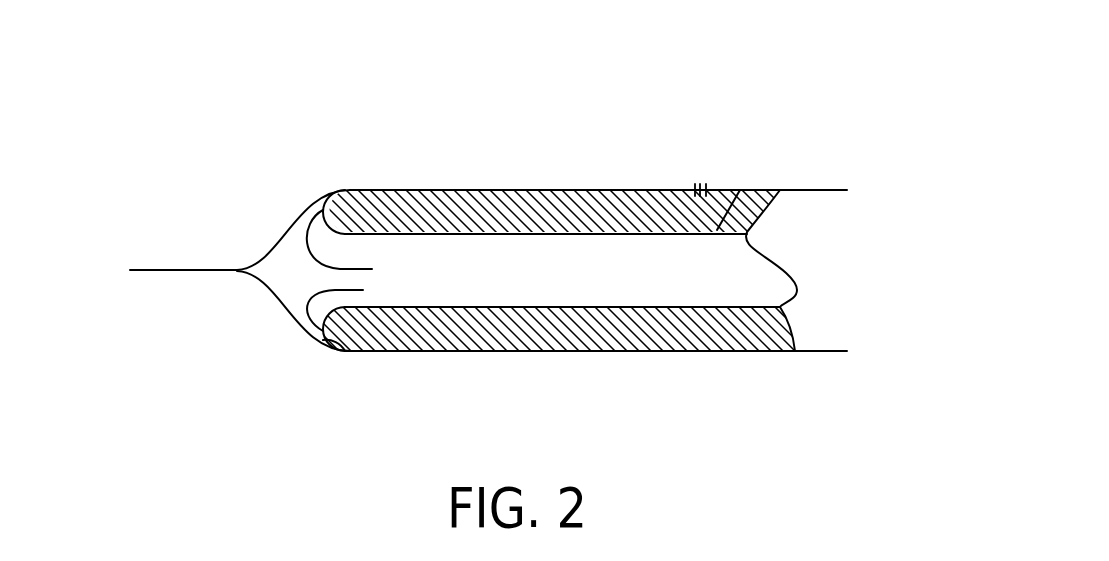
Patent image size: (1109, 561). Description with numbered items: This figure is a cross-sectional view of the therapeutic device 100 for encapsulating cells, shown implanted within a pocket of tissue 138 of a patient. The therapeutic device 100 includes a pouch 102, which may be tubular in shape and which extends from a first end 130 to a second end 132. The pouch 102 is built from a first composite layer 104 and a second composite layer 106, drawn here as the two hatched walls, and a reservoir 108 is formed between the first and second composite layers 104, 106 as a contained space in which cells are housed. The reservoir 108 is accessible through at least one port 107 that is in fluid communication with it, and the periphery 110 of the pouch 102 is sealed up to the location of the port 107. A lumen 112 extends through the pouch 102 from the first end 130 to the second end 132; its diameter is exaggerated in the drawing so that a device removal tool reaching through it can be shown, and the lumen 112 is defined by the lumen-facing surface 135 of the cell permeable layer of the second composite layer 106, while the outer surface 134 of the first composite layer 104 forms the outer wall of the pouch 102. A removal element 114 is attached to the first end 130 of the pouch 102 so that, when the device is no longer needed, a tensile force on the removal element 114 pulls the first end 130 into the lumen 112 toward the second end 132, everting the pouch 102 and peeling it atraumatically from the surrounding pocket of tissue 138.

The therapeutic device 100 is at (323, 146).
The pouch 102 is at (393, 189).
The first composite layer 104 is at (462, 189).
The second composite layer 106 is at (473, 306).
The port 107 is at (698, 186).
The reservoir 108 is at (527, 215).
The periphery 110 is at (332, 352).
The lumen 112 is at (327, 311).
The removal element 114 is at (372, 269).
The first end 130 is at (317, 241).
The second end 132 is at (770, 258).
The outer surface 134 is at (635, 190).
The lumen-facing surface 135 is at (740, 190).
The pocket of tissue 138 is at (297, 282).